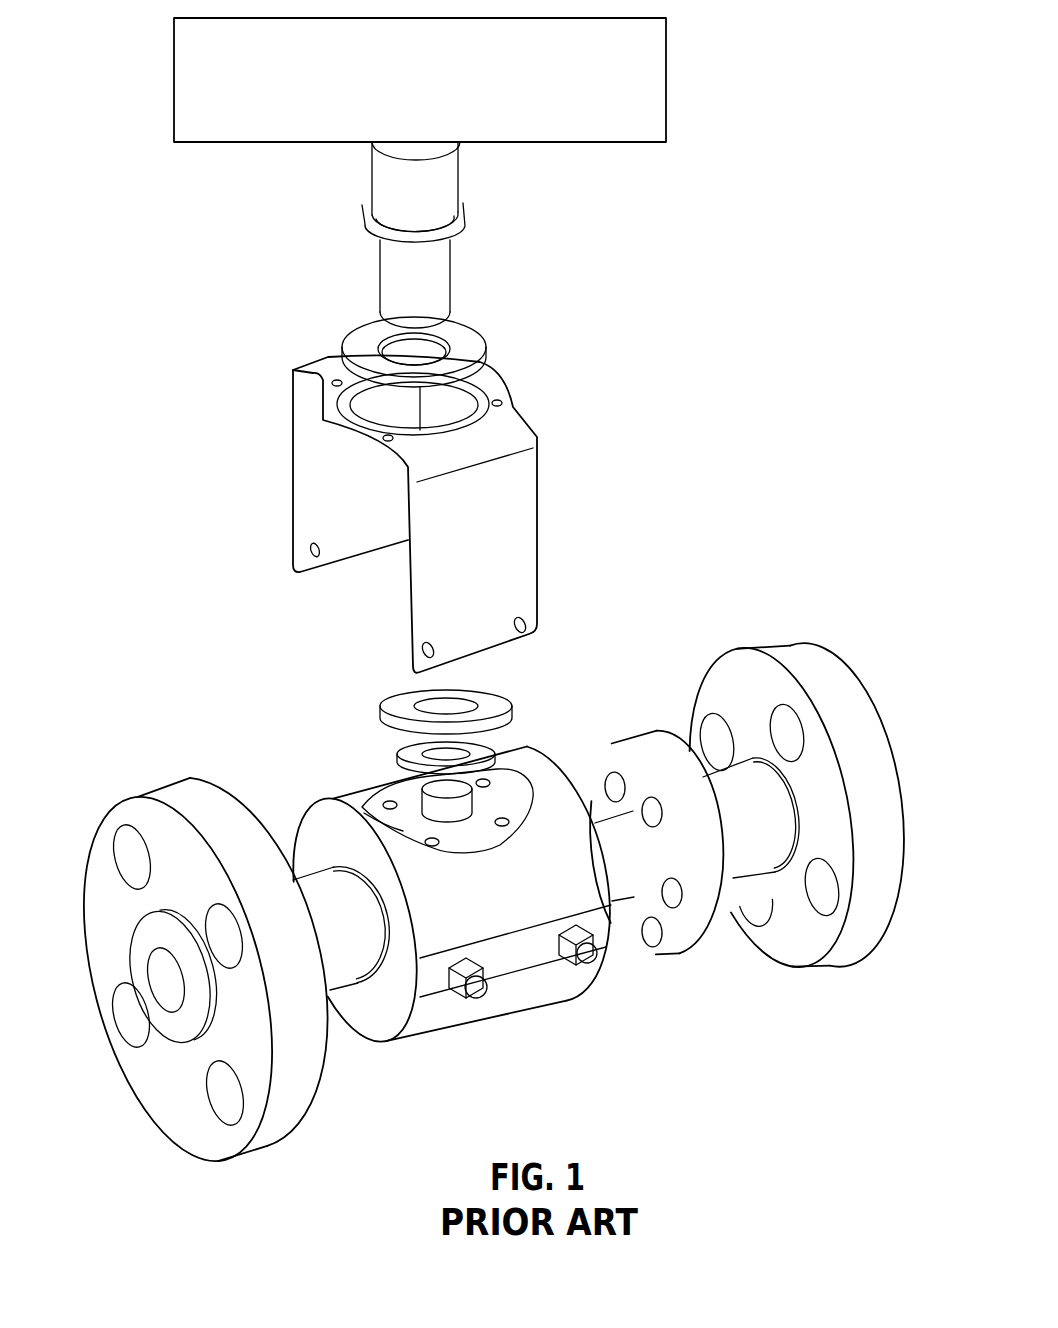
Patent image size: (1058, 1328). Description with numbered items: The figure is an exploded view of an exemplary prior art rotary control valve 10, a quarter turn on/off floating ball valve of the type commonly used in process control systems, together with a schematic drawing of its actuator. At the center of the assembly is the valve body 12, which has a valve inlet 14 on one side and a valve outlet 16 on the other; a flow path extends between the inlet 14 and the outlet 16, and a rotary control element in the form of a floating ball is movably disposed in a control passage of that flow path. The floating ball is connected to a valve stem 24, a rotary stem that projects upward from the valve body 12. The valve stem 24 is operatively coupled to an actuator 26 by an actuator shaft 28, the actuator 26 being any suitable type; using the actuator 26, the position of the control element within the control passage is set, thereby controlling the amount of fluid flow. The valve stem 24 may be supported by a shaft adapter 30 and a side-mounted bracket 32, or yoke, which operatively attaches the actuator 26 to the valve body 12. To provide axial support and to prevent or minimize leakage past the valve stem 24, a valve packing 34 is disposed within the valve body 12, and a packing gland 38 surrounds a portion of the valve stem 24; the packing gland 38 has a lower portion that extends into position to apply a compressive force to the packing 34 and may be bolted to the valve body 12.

The rotary control valve 10 is at (491, 853).
The valve body 12 is at (457, 869).
The valve inlet 14 is at (166, 977).
The valve outlet 16 is at (905, 768).
The valve stem 24 is at (489, 796).
The actuator 26 is at (660, 83).
The actuator shaft 28 is at (430, 190).
The shaft adapter 30 is at (432, 291).
The side-mounted bracket 32 is at (527, 491).
The valve packing 34 is at (398, 761).
The packing gland 38 is at (380, 712).